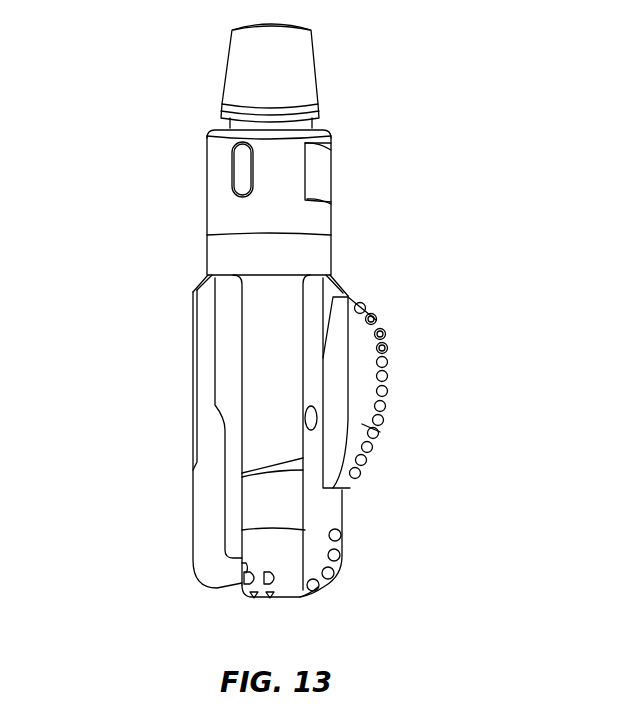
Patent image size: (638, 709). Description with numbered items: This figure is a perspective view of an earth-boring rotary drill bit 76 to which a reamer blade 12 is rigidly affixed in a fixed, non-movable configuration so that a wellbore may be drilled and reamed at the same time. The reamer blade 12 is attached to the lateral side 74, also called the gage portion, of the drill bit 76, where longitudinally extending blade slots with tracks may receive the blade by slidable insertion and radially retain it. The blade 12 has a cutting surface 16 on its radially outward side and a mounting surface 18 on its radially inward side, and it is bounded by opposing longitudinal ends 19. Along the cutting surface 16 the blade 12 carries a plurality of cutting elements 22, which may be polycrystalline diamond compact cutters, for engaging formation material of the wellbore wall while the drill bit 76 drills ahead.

The earth-boring rotary drill bit 76 is at (198, 597).
The mounting surface 18 is at (323, 400).
The longitudinal ends 19 is at (348, 297).
The cutting surface 16 is at (388, 372).
The cutting elements 22 is at (388, 347).
The reamer blade 12 is at (388, 430).
The lateral side 74 is at (332, 510).